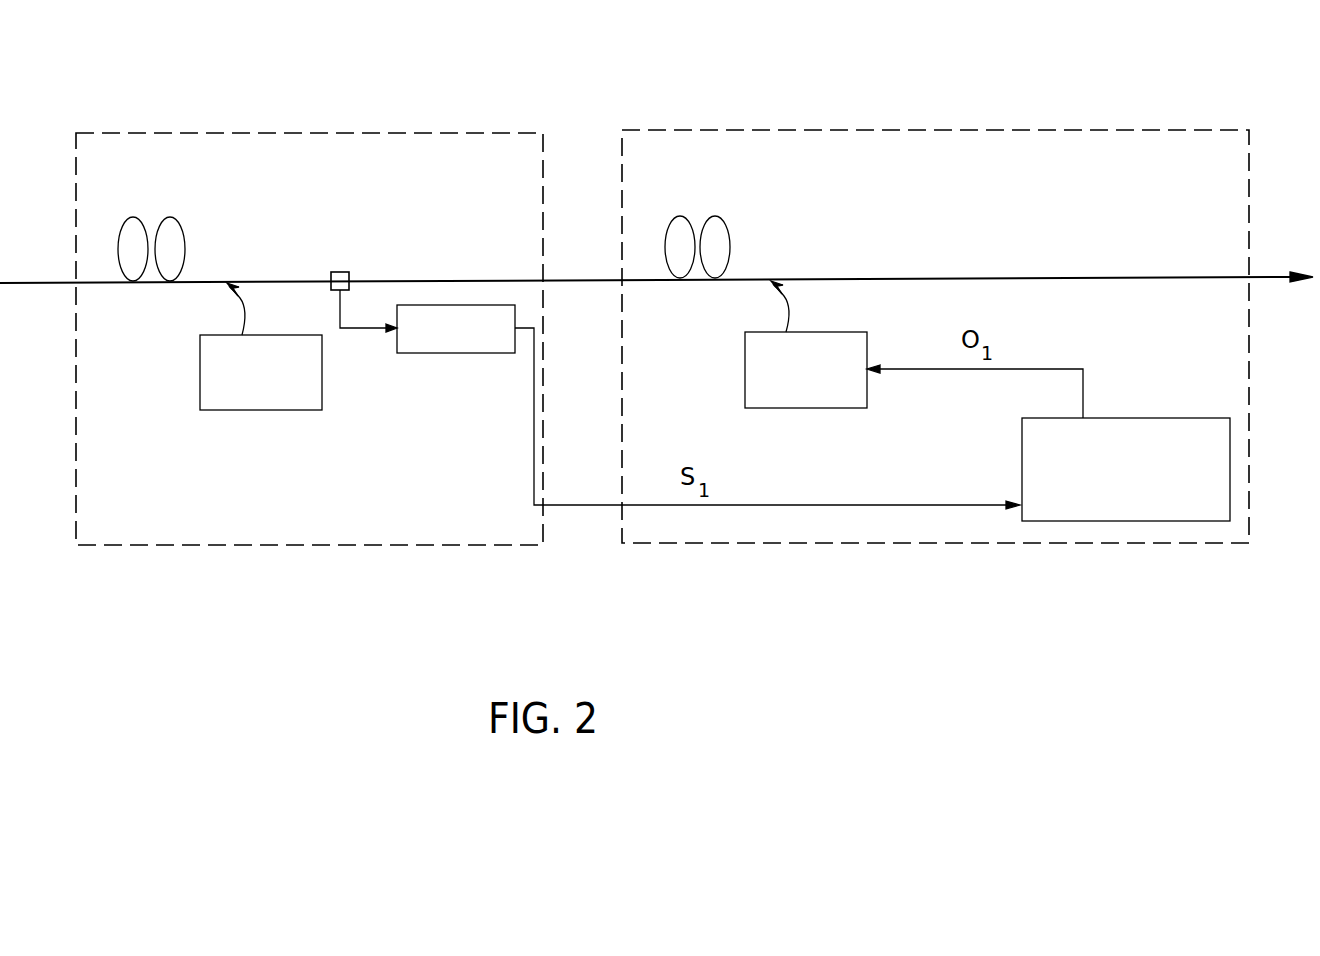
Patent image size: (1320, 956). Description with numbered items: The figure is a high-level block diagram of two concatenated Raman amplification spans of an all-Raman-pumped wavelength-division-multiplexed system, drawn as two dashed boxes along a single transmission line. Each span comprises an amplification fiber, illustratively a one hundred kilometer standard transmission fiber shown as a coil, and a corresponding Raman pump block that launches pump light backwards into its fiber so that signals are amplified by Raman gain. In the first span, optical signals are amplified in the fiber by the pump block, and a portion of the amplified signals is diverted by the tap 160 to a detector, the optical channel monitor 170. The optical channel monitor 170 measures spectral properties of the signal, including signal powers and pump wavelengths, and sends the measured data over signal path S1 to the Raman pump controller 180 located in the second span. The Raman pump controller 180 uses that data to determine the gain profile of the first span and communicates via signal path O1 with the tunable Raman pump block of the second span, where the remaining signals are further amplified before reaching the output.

The tap 160 is at (339, 271).
The optical channel monitor 170 is at (443, 353).
The Raman pump controller 180 is at (1165, 418).